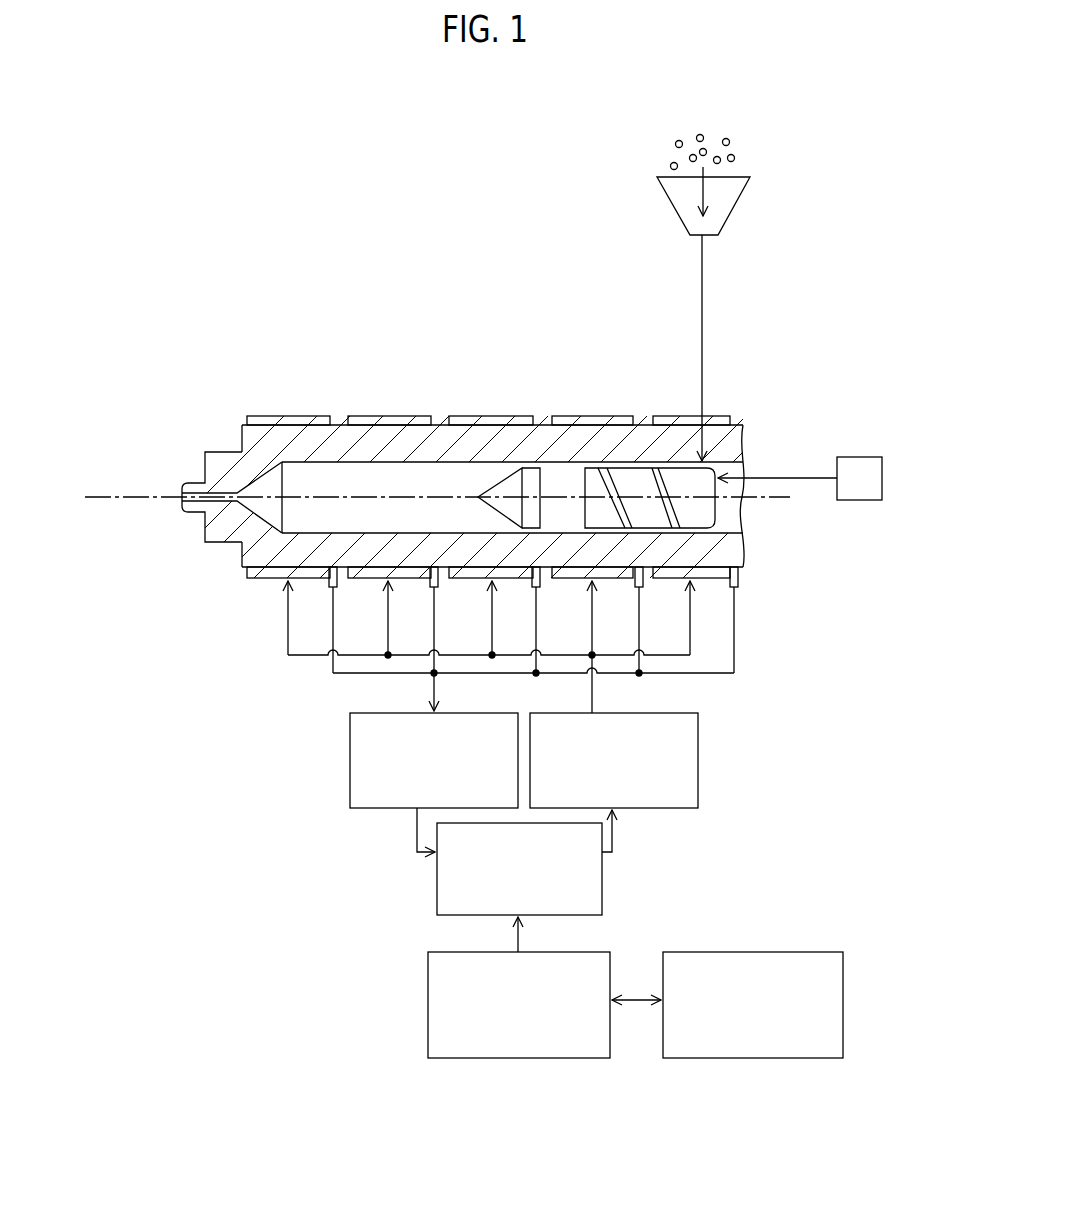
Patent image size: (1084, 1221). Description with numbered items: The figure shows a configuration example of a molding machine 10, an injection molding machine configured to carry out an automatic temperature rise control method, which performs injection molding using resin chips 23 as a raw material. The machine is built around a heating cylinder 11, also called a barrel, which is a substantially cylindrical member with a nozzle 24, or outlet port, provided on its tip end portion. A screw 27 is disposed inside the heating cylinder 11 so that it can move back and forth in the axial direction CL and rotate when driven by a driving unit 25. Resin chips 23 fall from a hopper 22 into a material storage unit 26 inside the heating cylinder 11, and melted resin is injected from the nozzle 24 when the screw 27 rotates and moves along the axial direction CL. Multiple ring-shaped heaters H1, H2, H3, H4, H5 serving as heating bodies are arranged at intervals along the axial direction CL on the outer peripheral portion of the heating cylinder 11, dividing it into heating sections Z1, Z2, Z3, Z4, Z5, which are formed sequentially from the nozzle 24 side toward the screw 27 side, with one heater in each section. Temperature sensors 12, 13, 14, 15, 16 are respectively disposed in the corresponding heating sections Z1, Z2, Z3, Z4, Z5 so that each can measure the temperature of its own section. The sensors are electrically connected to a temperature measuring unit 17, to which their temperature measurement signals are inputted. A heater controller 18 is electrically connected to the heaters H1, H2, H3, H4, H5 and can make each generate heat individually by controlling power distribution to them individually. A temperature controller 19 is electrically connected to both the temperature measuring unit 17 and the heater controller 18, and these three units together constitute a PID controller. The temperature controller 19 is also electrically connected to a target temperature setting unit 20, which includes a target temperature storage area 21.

The molding machine 10 is at (180, 312).
The heating cylinder 11 is at (440, 425).
The temperature sensor 12 is at (337, 589).
The temperature sensor 13 is at (438, 589).
The temperature sensor 14 is at (540, 589).
The temperature sensor 15 is at (643, 589).
The temperature sensor 16 is at (738, 589).
The temperature measuring unit 17 is at (350, 740).
The heater controller 18 is at (698, 757).
The temperature controller 19 is at (437, 882).
The target temperature setting unit 20 is at (428, 993).
The target temperature storage area 21 is at (843, 990).
The hopper 22 is at (731, 212).
The resin chips 23 is at (730, 142).
The nozzle 24 is at (182, 500).
The driving unit 25 is at (860, 457).
The material storage unit 26 is at (303, 475).
The screw 27 is at (707, 500).
The axial direction CL is at (118, 496).
The heater H1 is at (302, 416).
The heater H2 is at (402, 416).
The heater H3 is at (510, 416).
The heater H4 is at (612, 416).
The heater H5 is at (718, 416).
The heating section Z1 is at (290, 404).
The heating section Z2 is at (391, 404).
The heating section Z3 is at (491, 404).
The heating section Z4 is at (593, 404).
The heating section Z5 is at (663, 404).